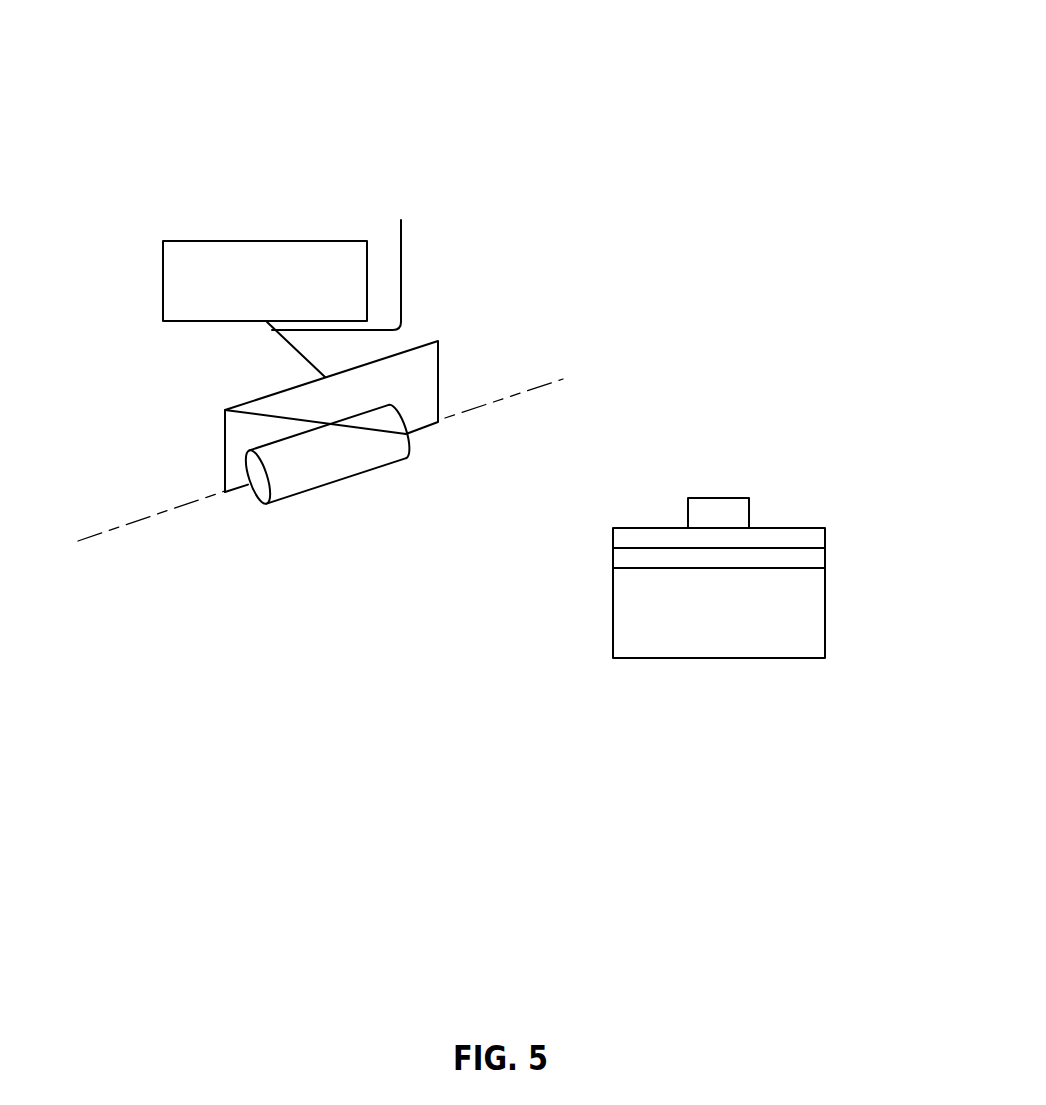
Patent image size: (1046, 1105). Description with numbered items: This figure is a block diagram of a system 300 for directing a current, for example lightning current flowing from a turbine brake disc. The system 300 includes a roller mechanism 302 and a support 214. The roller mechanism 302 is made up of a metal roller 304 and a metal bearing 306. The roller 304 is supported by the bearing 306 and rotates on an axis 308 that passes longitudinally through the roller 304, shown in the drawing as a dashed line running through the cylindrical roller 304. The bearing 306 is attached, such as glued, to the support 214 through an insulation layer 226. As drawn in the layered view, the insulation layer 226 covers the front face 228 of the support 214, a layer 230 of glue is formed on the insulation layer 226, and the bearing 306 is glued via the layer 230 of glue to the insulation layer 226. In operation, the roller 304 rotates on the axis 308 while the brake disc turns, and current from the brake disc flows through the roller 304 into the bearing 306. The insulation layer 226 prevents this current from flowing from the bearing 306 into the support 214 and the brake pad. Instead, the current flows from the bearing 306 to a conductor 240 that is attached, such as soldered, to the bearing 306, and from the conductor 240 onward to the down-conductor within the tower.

The system 300 is at (362, 92).
The support 214 is at (268, 240).
The conductor 240 is at (402, 241).
The roller mechanism 302 is at (183, 425).
The metal roller 304 is at (404, 460).
The metal bearing 306 is at (293, 350).
The axis 308 is at (543, 385).
The layer of glue 230 is at (825, 528).
The insulation layer 226 is at (825, 553).
The front face 228 is at (643, 567).